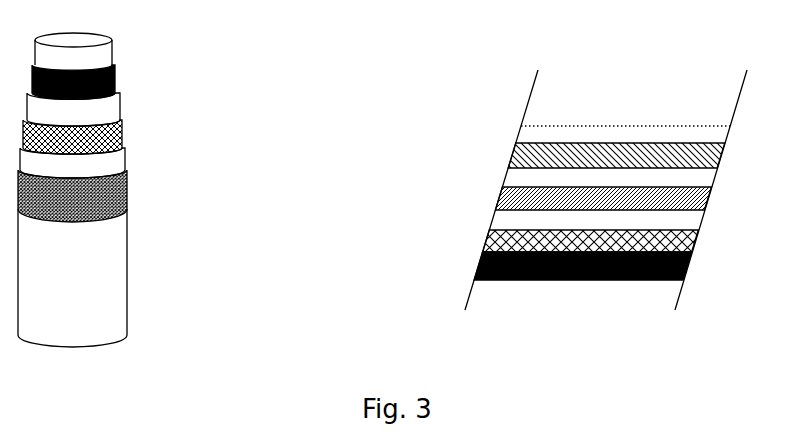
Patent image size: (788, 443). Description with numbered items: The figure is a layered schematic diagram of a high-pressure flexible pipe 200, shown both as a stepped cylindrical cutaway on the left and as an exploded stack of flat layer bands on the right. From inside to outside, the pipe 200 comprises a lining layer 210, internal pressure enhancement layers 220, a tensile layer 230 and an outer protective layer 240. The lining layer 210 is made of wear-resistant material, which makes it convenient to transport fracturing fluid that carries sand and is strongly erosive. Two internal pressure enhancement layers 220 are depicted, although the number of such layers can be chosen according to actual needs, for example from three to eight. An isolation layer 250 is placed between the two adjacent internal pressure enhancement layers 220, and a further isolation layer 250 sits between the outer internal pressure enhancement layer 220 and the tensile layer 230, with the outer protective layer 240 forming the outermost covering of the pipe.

The high-pressure flexible pipe 200 is at (382, 198).
The lining layer 210 is at (517, 128).
The internal pressure enhancement layer 220 is at (515, 147).
The tensile layer 230 is at (490, 243).
The outer protective layer 240 is at (478, 268).
The isolation layer 250 is at (515, 222).